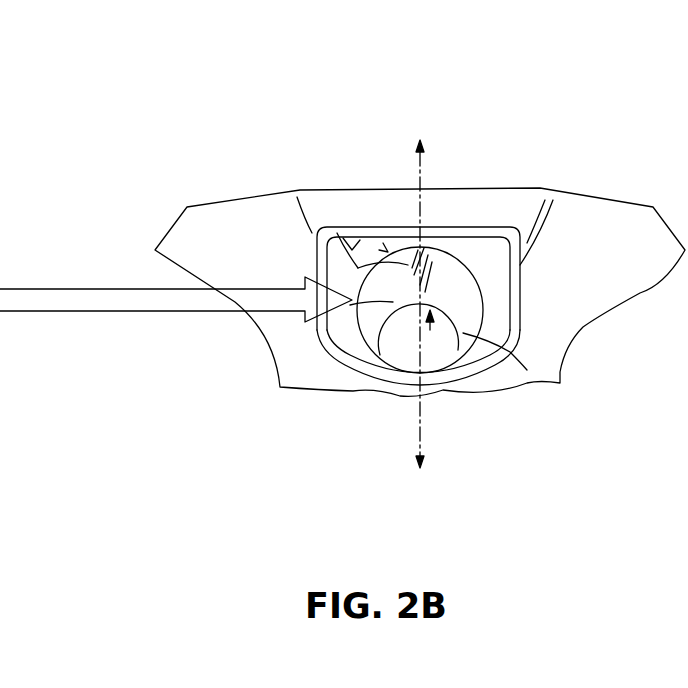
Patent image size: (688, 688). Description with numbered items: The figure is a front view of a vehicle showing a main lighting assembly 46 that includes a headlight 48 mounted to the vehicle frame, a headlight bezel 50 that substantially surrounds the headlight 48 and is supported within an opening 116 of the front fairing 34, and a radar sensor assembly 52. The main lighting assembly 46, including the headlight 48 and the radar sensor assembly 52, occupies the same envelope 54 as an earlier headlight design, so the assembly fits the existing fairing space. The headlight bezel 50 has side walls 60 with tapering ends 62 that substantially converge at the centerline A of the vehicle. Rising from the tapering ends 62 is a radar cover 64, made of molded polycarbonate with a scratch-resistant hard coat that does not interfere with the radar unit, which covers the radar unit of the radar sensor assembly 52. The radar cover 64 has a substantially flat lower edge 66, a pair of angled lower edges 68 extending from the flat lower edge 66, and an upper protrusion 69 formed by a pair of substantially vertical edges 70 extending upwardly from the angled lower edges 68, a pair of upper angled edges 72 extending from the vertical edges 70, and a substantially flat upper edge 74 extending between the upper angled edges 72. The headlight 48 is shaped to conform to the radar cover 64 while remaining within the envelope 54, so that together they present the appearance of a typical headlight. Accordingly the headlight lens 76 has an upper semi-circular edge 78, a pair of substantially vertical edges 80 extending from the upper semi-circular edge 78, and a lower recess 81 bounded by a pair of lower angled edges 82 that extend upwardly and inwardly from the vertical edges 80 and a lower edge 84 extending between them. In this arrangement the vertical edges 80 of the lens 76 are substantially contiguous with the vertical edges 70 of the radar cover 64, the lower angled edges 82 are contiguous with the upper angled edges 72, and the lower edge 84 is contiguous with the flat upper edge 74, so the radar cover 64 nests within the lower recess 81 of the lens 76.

The front fairing 34 is at (192, 237).
The main lighting assembly 46 is at (242, 102).
The headlight 48 is at (458, 232).
The headlight bezel 50 is at (503, 230).
The radar sensor assembly 52 is at (465, 370).
The envelope 54 is at (470, 275).
The side walls 60 is at (313, 240).
The tapering ends 62 is at (352, 338).
The radar cover 64 is at (432, 362).
The flat lower edge 66 is at (402, 352).
The angled lower edges 68 is at (380, 353).
The upper protrusion 69 is at (483, 370).
The vertical edges 70 is at (527, 370).
The upper angled edges 72 is at (455, 325).
The flat upper edge 74 is at (360, 330).
The headlight lens 76 is at (370, 270).
The upper semi-circular edge 78 is at (383, 243).
The vertical edges 80 is at (357, 377).
The lower recess 81 is at (470, 283).
The lower angled edges 82 is at (372, 300).
The lower edge 84 is at (422, 290).
The opening 116 is at (337, 233).
The centerline A is at (433, 313).